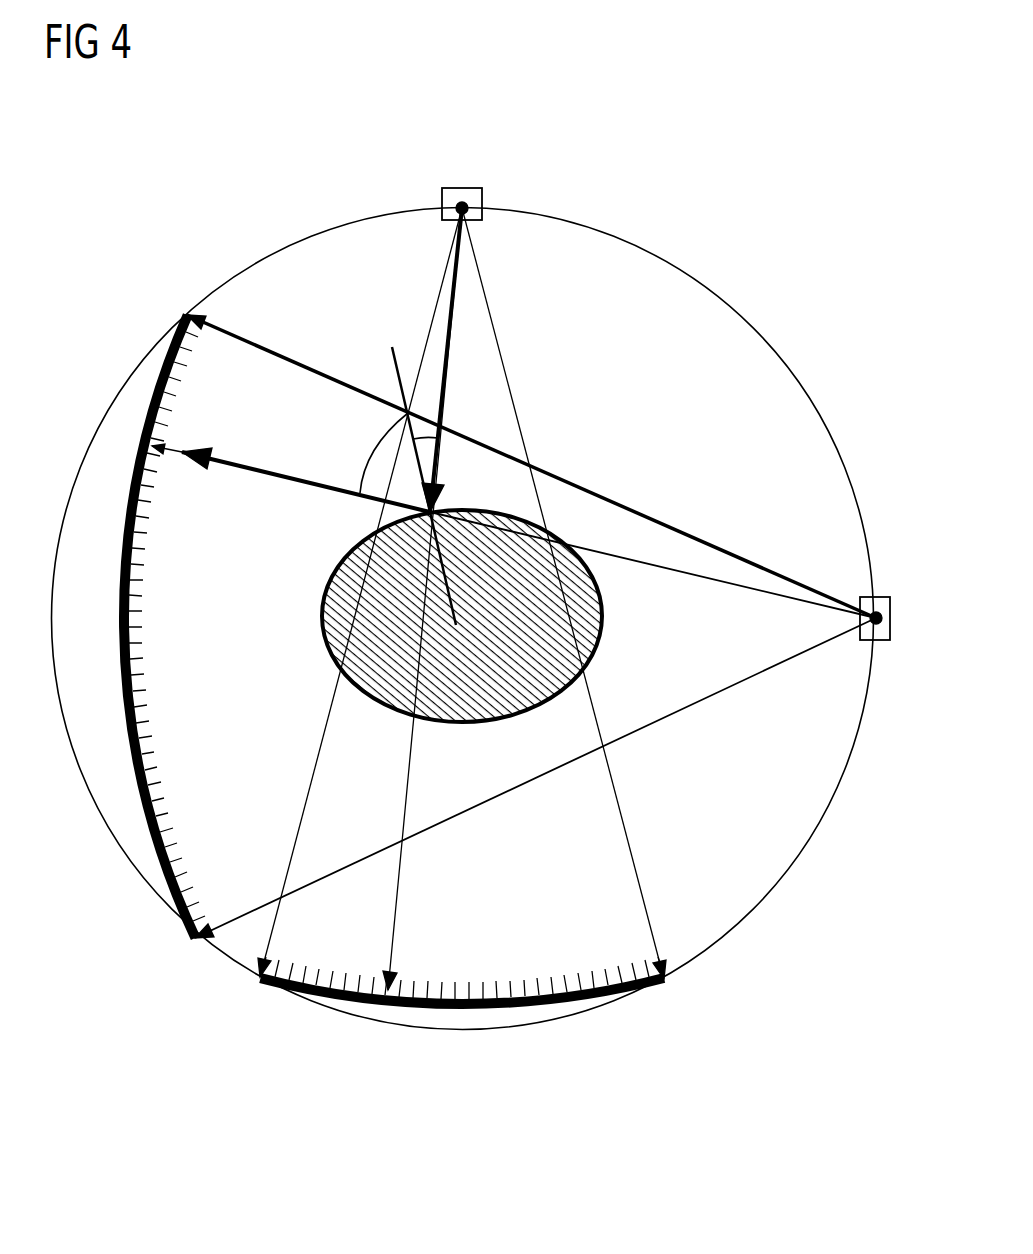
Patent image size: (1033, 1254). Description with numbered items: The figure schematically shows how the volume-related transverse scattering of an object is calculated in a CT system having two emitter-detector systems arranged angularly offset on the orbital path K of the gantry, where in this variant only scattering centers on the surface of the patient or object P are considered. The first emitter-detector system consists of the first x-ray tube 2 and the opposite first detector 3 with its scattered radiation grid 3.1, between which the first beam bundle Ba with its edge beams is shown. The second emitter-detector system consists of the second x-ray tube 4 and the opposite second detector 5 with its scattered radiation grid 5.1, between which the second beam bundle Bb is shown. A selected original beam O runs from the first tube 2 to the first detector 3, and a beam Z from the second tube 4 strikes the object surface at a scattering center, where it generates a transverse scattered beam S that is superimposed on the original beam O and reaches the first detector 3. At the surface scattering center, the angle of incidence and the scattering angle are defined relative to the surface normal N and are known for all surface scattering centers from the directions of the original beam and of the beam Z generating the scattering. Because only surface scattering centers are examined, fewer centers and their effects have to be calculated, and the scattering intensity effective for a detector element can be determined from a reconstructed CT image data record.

The orbital path of the gantry K is at (752, 320).
The patient/object P is at (323, 626).
The second x-ray tube 4 is at (448, 188).
The first x-ray tube 2 is at (880, 598).
The first detector 3 is at (138, 626).
The scattered radiation grid 3.1 is at (145, 683).
The second detector 5 is at (462, 992).
The scattered radiation grid 5.1 is at (555, 974).
The beam generating scattering Z is at (446, 412).
The second beam bundle Bb is at (632, 866).
The first beam bundle Ba is at (664, 523).
The original beam O is at (676, 572).
The scattered beam S is at (262, 478).
The surface normal N is at (393, 358).